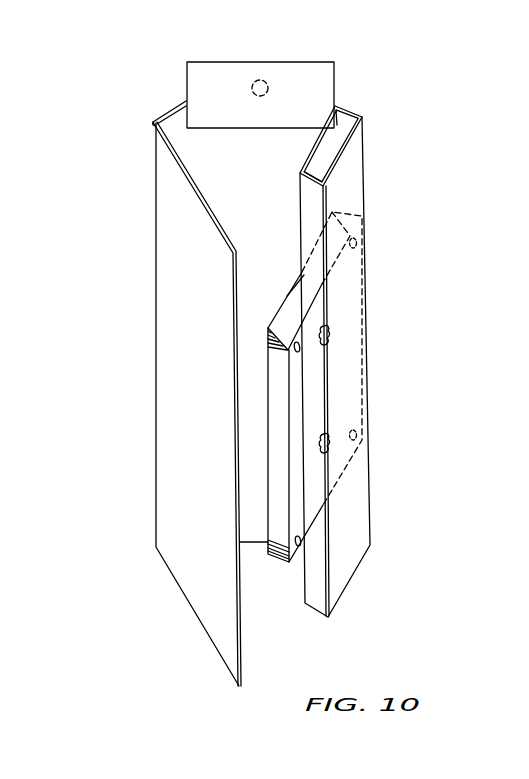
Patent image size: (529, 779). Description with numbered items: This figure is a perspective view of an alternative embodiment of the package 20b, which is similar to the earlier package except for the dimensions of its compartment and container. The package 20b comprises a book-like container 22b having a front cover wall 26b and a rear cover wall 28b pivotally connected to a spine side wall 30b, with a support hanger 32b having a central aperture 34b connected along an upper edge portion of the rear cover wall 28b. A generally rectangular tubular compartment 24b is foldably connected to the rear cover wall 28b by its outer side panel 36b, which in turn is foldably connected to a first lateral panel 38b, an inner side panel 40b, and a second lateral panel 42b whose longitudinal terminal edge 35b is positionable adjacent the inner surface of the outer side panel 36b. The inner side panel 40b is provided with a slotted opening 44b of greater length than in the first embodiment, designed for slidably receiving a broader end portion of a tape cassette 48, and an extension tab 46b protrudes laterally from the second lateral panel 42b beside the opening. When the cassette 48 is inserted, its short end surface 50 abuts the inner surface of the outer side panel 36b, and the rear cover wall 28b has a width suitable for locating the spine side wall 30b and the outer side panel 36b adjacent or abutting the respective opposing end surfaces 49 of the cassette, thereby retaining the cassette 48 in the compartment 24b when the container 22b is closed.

The package 20b is at (104, 182).
The container 22b is at (165, 225).
The compartment 24b is at (357, 184).
The front cover wall 26b is at (170, 331).
The rear cover wall 28b is at (256, 544).
The spine side wall 30b is at (170, 122).
The support hanger 32b is at (345, 68).
The aperture 34b is at (263, 79).
The longitudinal terminal edge 35b is at (335, 113).
The outer side panel 36b is at (343, 118).
The first lateral panel 38b is at (356, 146).
The inner side panel 40b is at (305, 214).
The second lateral panel 42b is at (317, 166).
The slotted opening 44b is at (322, 388).
The extension tab 46b is at (296, 289).
The tape cassette 48 is at (272, 388).
The long end surfaces 49 is at (362, 272).
The short end surface 50 is at (275, 332).